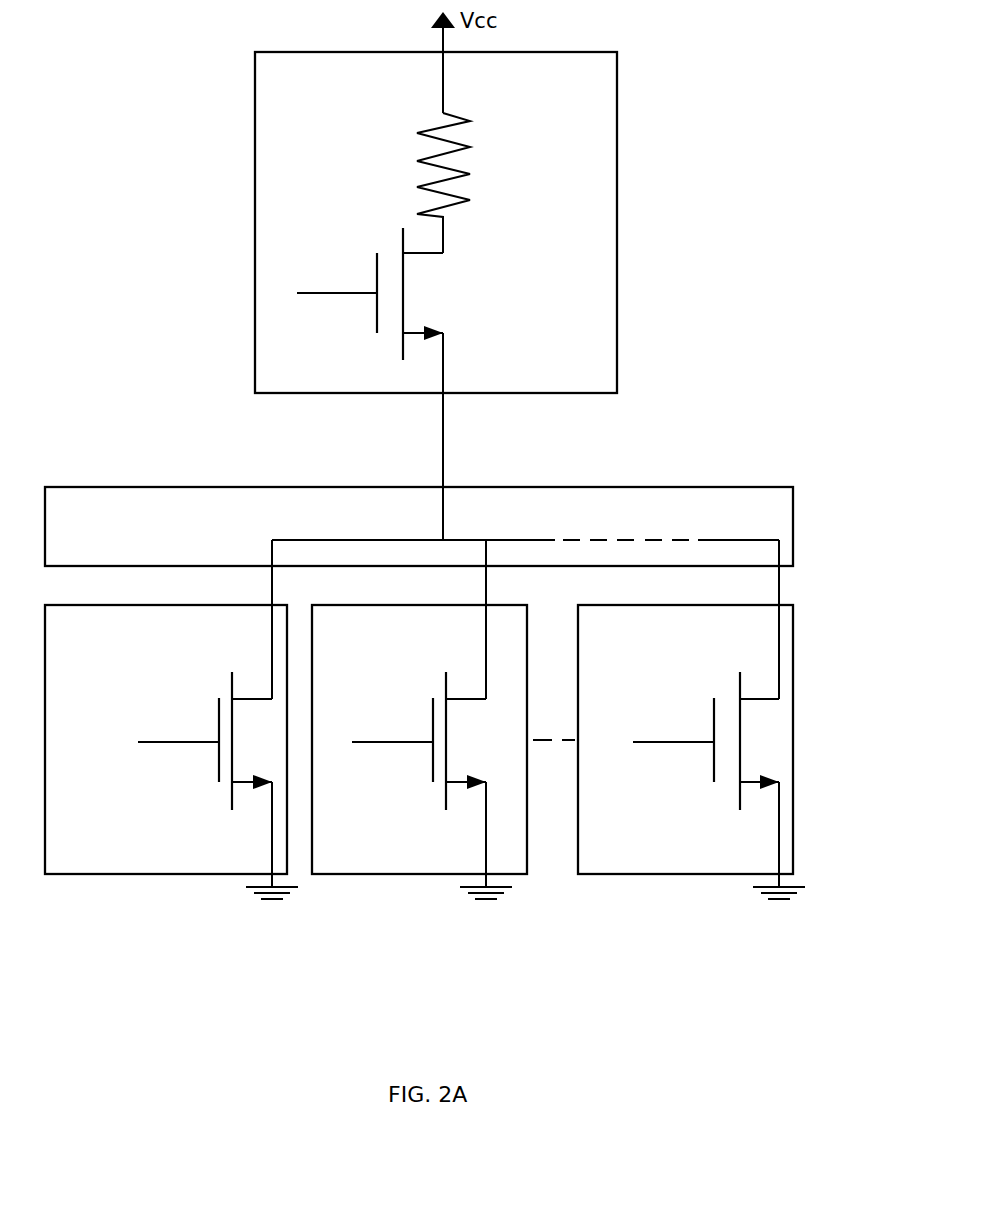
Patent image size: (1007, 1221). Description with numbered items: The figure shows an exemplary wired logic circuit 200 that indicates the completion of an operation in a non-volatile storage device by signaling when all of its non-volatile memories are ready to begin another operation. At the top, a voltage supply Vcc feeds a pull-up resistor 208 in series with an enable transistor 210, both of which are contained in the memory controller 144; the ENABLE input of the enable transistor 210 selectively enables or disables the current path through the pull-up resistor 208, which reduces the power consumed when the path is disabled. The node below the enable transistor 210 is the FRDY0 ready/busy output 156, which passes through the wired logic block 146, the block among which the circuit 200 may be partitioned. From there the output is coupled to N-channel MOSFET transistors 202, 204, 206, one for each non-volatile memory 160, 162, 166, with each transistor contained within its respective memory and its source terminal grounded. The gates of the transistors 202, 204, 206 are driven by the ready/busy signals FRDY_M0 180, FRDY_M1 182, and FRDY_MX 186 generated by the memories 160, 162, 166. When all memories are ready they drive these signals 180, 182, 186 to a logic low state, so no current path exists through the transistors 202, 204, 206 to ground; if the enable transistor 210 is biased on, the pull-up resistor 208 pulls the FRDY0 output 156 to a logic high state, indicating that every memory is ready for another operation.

The controller 144 is at (436, 222).
The pull-up resistor 208 is at (403, 180).
The enable transistor 210 is at (388, 240).
The FRDY0 ready/busy output 156 is at (443, 462).
The wired logic block 146 is at (419, 526).
The FRDY_M0 ready/busy signal 180 is at (272, 600).
The FRDY_M1 ready/busy signal 182 is at (486, 600).
The FRDY_MX ready/busy signal 186 is at (779, 598).
The non-volatile memory 160 is at (166, 739).
The non-volatile memory 162 is at (419, 739).
The non-volatile memory 166 is at (685, 739).
The N-channel MOSFET transistor 202 is at (216, 680).
The N-channel MOSFET transistor 204 is at (428, 685).
The N-channel MOSFET transistor 206 is at (723, 680).
The wired logic circuit 200 is at (784, 960).